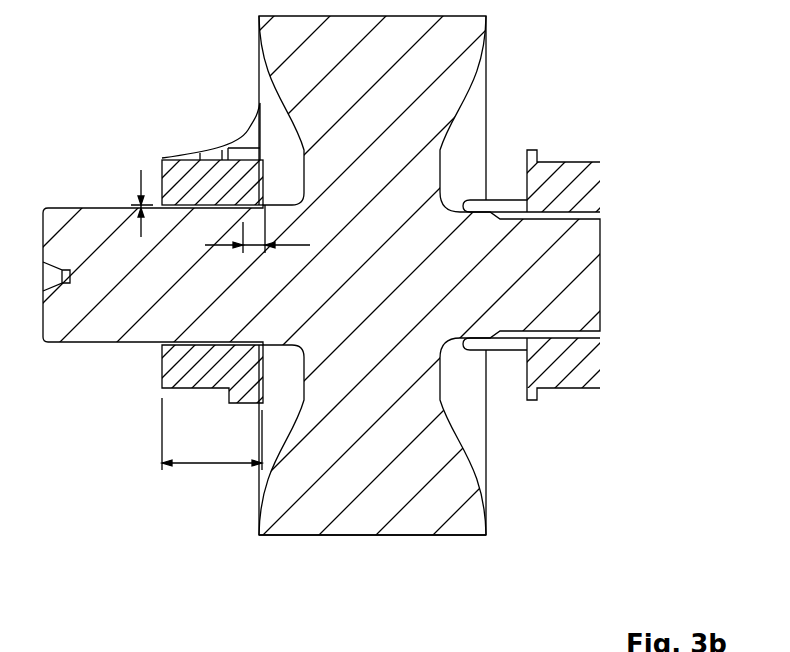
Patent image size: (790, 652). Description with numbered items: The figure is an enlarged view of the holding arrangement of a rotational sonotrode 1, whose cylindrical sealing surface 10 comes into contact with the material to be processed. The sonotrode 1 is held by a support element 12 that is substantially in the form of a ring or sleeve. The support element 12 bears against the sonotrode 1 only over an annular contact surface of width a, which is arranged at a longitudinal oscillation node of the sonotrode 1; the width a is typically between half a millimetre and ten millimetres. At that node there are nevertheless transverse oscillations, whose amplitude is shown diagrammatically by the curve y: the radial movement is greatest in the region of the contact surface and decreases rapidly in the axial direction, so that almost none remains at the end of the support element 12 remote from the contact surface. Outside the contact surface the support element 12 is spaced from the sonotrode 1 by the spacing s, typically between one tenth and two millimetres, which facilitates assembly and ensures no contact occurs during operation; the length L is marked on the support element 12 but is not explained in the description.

The rotational sonotrode 1 is at (255, 523).
The sealing surface 10 is at (352, 536).
The support element 12 is at (160, 369).
The transverse oscillation amplitude y is at (247, 127).
The spacing s is at (142, 191).
The width of the contact surface a is at (257, 229).
The ring length L is at (212, 434).